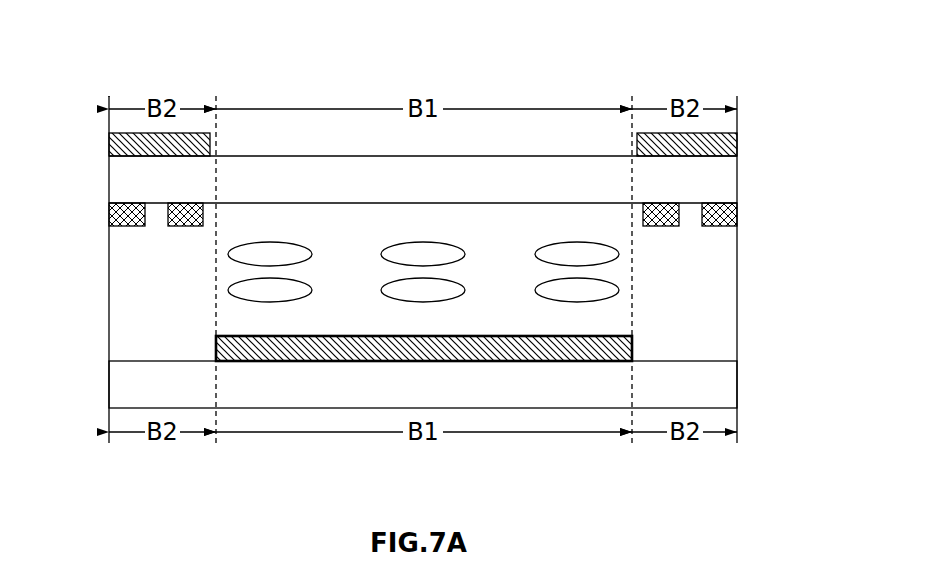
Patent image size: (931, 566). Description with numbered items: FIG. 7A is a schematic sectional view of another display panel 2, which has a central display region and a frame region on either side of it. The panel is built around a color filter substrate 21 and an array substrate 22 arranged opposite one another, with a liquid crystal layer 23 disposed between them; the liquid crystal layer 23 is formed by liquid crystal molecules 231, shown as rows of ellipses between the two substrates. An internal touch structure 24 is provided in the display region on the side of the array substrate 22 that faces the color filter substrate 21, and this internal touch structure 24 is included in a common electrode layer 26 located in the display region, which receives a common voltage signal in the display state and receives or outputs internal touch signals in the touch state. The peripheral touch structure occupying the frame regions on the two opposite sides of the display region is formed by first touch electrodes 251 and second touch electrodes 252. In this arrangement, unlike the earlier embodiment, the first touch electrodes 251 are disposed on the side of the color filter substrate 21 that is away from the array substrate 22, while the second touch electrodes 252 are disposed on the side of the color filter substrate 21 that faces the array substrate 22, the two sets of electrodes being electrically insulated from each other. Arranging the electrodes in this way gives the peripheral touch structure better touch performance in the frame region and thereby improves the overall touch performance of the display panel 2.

The display panel 2 is at (416, 75).
The first touch electrodes 251 is at (140, 144).
The color filter substrate 21 is at (140, 179).
The second touch electrodes 252 is at (122, 215).
The liquid crystal layer 23 is at (425, 272).
The liquid crystal molecules 231 is at (250, 254).
The common electrode layer 26 is at (216, 336).
The internal touch structure 24 is at (632, 347).
The array substrate 22 is at (140, 380).